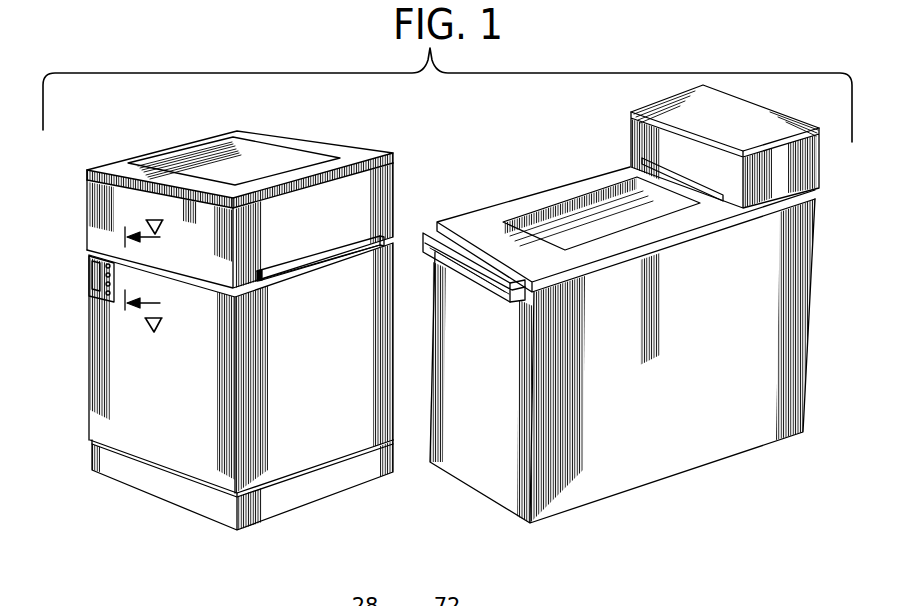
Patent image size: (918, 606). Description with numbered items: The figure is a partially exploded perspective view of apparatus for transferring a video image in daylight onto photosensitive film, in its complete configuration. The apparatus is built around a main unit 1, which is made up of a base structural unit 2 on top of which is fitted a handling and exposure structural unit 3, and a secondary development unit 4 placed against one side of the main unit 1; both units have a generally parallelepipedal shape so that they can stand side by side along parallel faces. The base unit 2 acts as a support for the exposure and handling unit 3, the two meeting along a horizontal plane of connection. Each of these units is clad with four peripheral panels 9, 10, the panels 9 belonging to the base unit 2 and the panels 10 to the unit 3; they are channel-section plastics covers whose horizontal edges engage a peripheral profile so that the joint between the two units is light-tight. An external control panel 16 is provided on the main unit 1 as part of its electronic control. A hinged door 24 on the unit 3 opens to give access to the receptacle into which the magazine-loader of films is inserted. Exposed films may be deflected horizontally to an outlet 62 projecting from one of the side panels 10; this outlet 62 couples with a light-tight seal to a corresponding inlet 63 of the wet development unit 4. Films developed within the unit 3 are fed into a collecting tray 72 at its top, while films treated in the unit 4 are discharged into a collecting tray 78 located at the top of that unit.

The main unit 1 is at (75, 238).
The base structural unit 2 is at (84, 333).
The handling and exposure structural unit 3 is at (404, 212).
The secondary development unit 4 is at (815, 300).
The peripheral panels 9 is at (212, 470).
The peripheral panels 10 is at (143, 200).
The external control panel 16 is at (103, 296).
The hinged door 24 is at (393, 170).
The outlet 62 is at (328, 257).
The inlet 63 is at (499, 285).
The collecting tray 72 is at (257, 160).
The collecting tray 78 is at (574, 221).